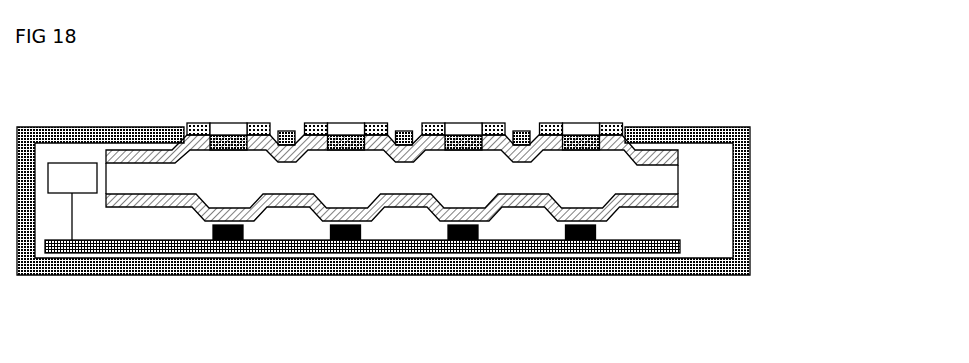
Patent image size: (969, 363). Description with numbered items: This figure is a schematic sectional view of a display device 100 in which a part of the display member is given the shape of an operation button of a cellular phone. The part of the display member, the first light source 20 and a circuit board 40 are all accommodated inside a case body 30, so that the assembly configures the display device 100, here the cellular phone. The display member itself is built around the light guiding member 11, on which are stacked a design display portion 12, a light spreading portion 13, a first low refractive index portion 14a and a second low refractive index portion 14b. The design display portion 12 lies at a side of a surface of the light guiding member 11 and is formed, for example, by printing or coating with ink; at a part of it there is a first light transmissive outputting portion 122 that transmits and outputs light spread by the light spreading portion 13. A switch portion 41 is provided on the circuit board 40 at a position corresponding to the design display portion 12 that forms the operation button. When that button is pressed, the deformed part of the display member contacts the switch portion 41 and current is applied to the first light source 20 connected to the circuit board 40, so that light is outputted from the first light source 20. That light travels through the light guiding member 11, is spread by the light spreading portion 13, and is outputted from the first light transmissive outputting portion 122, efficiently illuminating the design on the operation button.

The display device 100 is at (390, 198).
The case body 30 is at (738, 128).
The first light source 20 is at (73, 178).
The light guiding member 11 is at (647, 177).
The first low refractive index portion 14a is at (130, 158).
The second low refractive index portion 14b is at (145, 205).
The light spreading portion 13 is at (228, 146).
The design display portion 12 is at (258, 127).
The first light transmissive outputting portion 122 is at (228, 129).
The circuit board 40 is at (410, 247).
The switch portion 41 is at (252, 241).